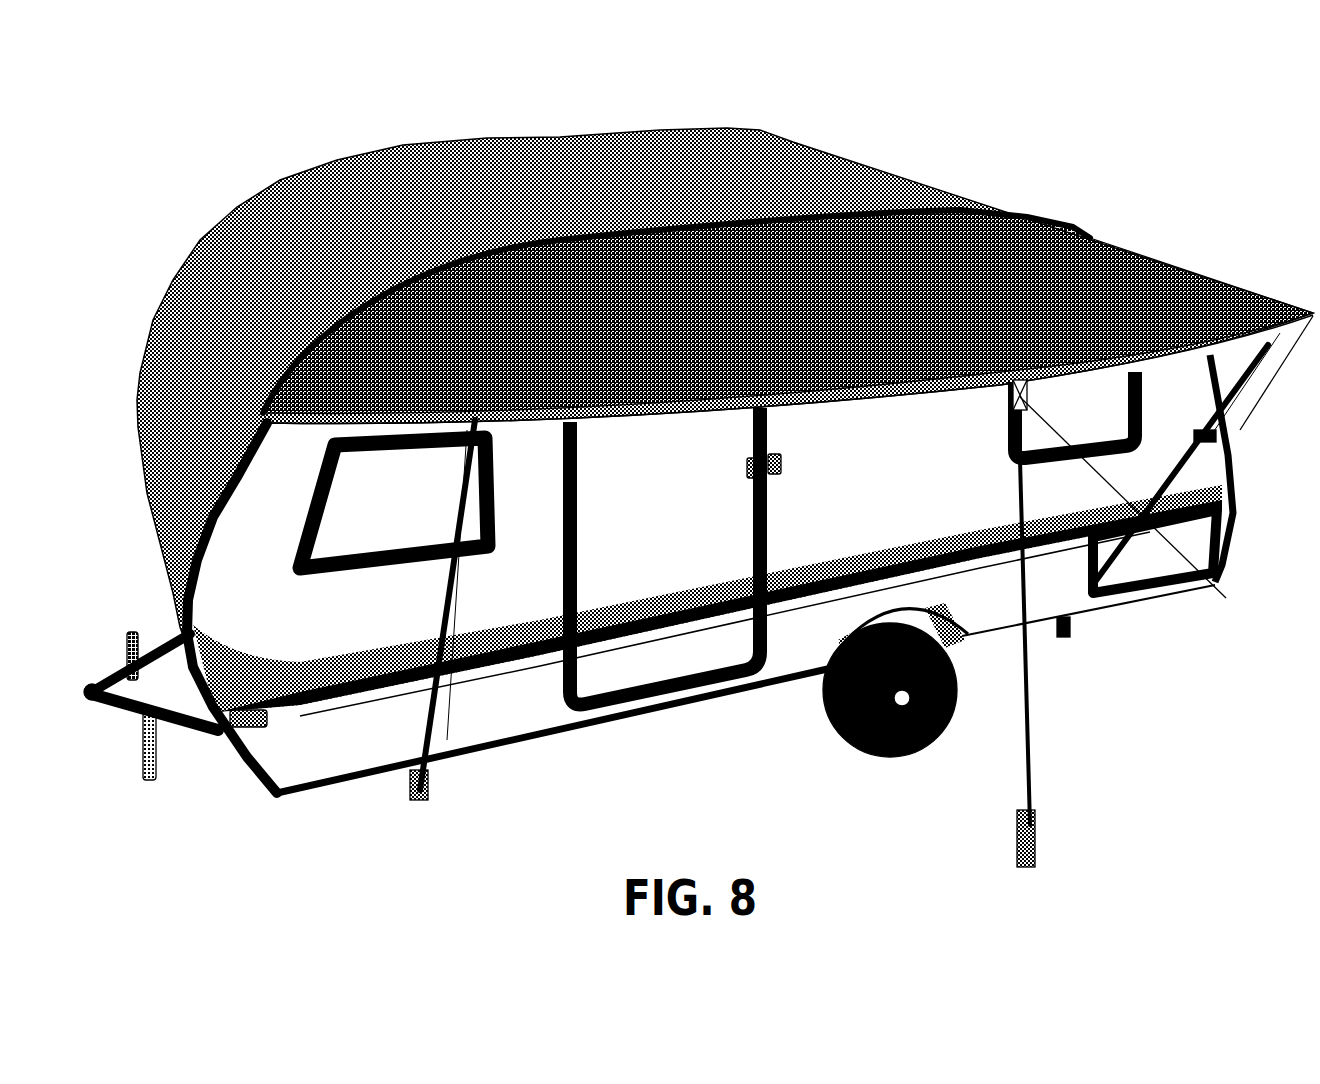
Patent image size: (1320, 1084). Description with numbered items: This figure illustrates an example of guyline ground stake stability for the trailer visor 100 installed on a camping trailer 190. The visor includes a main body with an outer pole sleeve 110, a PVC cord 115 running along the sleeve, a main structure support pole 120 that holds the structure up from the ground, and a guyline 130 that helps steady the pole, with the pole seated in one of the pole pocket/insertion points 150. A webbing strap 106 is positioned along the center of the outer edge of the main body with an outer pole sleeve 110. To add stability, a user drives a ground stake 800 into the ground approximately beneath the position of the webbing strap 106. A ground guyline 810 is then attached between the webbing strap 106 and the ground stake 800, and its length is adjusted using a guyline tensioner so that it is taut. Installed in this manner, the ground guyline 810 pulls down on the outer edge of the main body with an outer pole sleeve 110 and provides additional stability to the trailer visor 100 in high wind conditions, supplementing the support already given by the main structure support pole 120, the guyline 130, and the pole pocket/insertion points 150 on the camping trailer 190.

The camping trailer 190 is at (727, 133).
The PVC cord 115 is at (640, 237).
The main body with an outer pole sleeve 110 is at (1093, 257).
The trailer visor 100 is at (1228, 282).
The webbing strap 106 is at (1135, 504).
The main structure support pole 120 is at (425, 722).
The guyline 130 is at (458, 722).
The pole pocket/insertion points 150 is at (418, 796).
The ground guyline 810 is at (1027, 725).
The ground stake 800 is at (1032, 847).